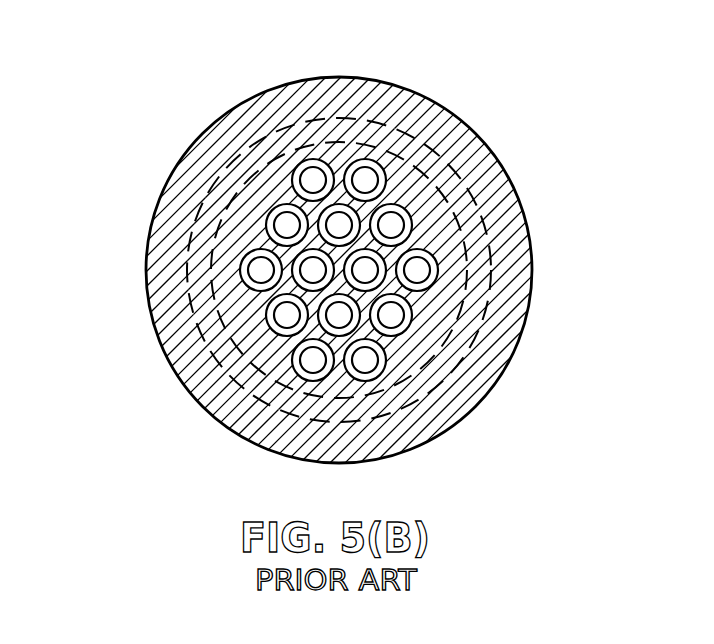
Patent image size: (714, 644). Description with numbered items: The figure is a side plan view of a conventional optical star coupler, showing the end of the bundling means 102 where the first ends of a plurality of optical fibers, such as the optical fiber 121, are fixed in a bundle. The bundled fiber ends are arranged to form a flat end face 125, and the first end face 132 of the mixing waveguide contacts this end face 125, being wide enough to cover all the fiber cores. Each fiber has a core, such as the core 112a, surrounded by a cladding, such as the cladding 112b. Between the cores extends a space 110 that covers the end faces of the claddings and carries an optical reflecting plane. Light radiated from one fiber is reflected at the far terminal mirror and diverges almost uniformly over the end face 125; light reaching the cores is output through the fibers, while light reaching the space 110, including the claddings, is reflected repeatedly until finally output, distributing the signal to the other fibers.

The bundling means 102 is at (515, 355).
The first end face of the waveguide 132 is at (443, 163).
The end face 125 is at (277, 187).
The space 110 is at (267, 295).
The optical fiber 121 is at (237, 194).
The core 112a is at (288, 223).
The cladding 112b is at (268, 232).